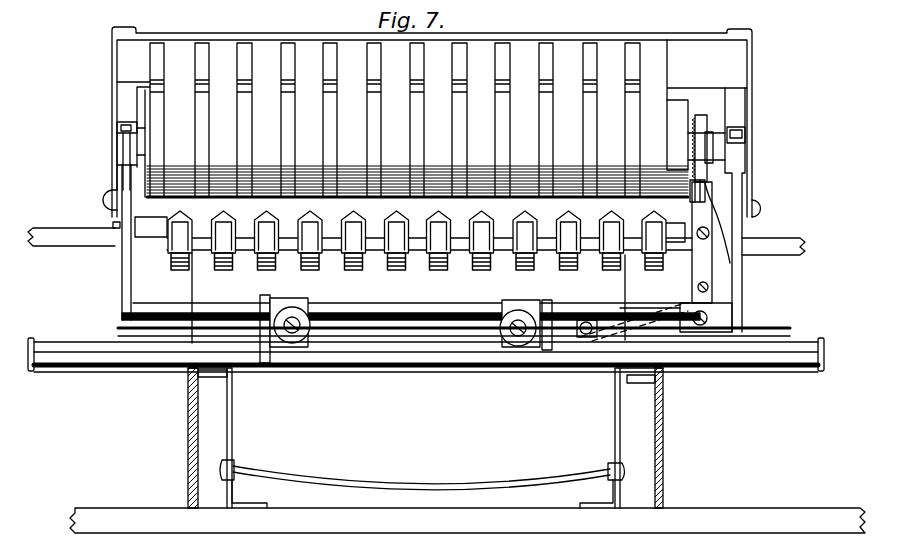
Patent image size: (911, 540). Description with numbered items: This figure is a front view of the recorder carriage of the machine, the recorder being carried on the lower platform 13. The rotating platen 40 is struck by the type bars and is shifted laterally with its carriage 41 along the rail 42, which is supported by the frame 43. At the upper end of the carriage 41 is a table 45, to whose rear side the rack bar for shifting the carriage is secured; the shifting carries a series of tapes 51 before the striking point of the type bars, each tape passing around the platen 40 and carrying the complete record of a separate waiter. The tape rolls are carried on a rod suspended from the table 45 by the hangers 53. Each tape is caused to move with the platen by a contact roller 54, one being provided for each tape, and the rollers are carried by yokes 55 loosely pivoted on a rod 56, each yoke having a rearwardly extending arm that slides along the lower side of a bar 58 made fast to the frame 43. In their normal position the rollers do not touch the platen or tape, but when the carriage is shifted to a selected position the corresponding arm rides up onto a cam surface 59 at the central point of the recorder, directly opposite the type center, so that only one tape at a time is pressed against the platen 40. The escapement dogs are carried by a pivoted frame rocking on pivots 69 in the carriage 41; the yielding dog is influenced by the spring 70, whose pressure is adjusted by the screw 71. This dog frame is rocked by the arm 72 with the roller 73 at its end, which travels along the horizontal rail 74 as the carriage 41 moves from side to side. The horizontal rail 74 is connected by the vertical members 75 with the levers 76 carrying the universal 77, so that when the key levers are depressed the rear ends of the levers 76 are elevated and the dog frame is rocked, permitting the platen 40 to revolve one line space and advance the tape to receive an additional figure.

The lower platform 13 is at (702, 516).
The rotating platen 40 is at (133, 175).
The carriage 41 is at (742, 285).
The rail 42 is at (130, 367).
The frame 43 is at (663, 428).
The table 45 is at (733, 72).
The tapes 51 is at (343, 207).
The hangers 53 is at (760, 121).
The contact roller 54 is at (515, 273).
The yokes 55 is at (522, 222).
The rod 56 is at (202, 222).
The bar 58 is at (781, 237).
The cam surface 59 is at (428, 257).
The pivots 69 is at (708, 325).
The spring 70 is at (705, 212).
The screw 71 is at (708, 232).
The arm 72 is at (685, 302).
The roller 73 is at (570, 323).
The horizontal rail 74 is at (453, 340).
The vertical members 75 is at (235, 420).
The levers 76 is at (622, 480).
The universal 77 is at (421, 475).